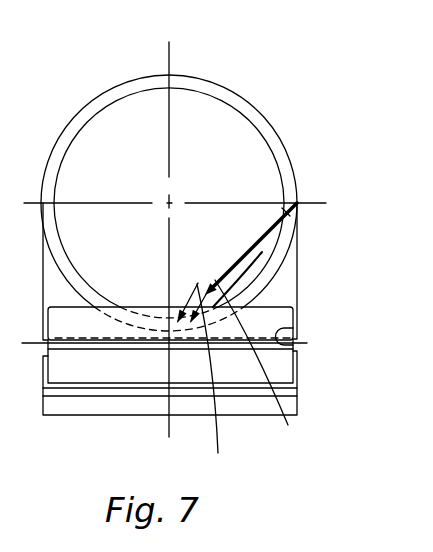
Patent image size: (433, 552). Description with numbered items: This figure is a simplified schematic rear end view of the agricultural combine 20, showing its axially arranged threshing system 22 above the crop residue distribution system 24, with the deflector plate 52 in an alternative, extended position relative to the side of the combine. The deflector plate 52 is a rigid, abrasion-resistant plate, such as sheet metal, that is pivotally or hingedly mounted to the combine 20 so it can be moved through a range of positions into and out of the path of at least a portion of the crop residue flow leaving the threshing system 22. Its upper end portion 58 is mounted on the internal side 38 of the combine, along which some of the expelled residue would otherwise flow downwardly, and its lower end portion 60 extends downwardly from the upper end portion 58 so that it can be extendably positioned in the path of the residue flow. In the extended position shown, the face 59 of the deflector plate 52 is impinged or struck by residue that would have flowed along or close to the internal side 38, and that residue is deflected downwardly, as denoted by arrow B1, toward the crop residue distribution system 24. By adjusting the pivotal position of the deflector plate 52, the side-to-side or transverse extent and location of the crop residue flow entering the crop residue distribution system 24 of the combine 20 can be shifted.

The agricultural combine 20 is at (266, 82).
The threshing system 22 is at (278, 122).
The crop residue distribution system 24 is at (300, 313).
The internal side 38 is at (294, 346).
The deflector plate 52 is at (264, 252).
The upper end portion 58 is at (286, 213).
The face 59 is at (261, 237).
The lower end portion 60 is at (267, 367).
The arrow B1 is at (213, 385).